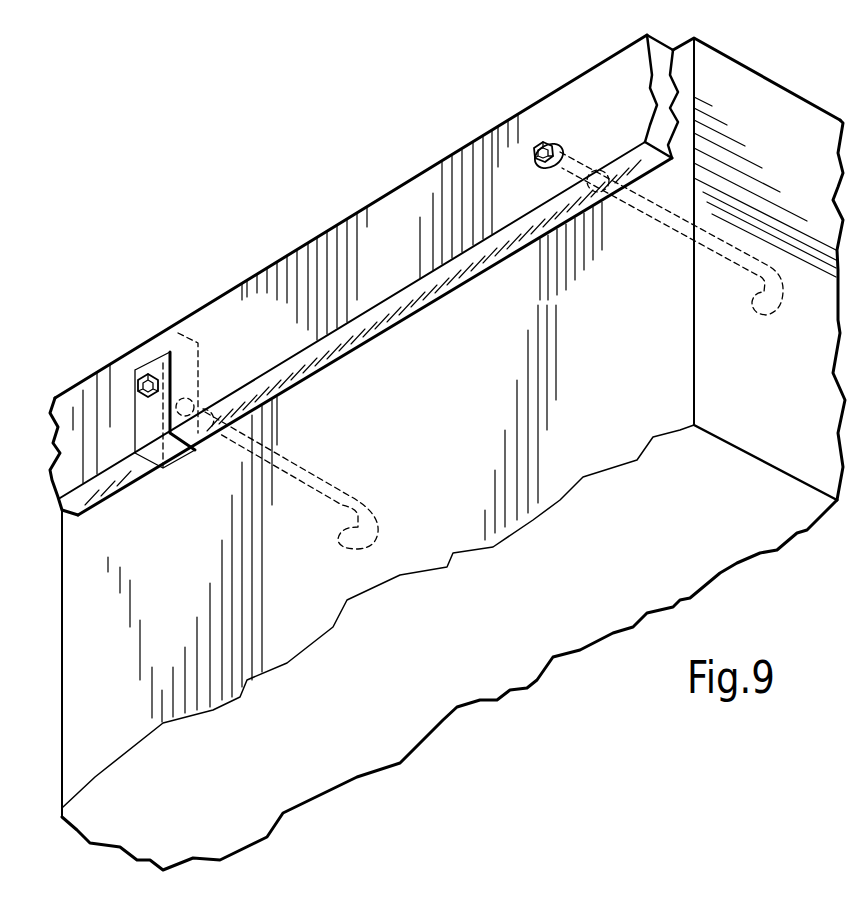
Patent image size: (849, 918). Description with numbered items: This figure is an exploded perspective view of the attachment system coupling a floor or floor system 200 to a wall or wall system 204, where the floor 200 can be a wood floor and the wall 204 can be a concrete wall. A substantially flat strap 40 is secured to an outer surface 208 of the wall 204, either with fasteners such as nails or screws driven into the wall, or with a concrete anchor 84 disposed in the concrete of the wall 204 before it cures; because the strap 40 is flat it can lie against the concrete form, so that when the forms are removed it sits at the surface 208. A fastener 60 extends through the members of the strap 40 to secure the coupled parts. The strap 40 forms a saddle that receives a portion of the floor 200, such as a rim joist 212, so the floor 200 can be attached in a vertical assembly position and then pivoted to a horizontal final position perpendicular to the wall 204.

The floor system 200 is at (385, 217).
The rim joist 212 is at (230, 312).
The fastener 60 is at (532, 147).
The strap 40 is at (133, 413).
The concrete anchor 84 is at (302, 463).
The wall system 204 is at (672, 575).
The outer surface 208 is at (562, 467).